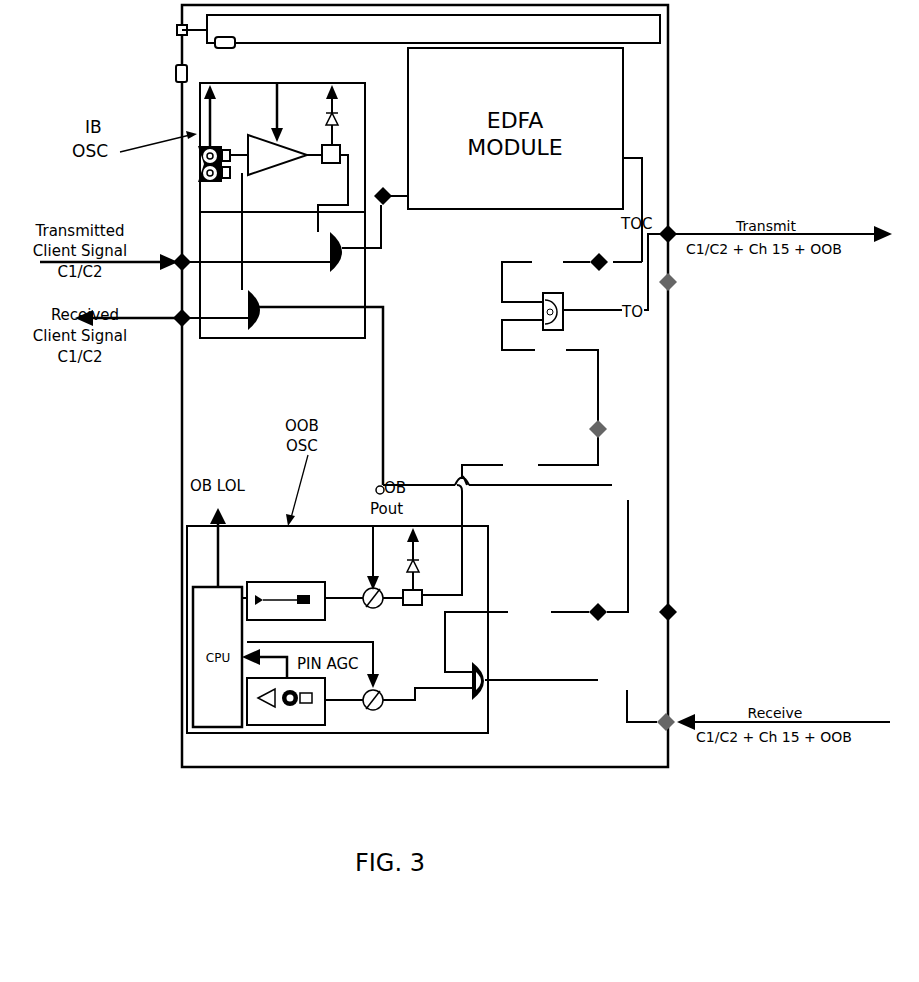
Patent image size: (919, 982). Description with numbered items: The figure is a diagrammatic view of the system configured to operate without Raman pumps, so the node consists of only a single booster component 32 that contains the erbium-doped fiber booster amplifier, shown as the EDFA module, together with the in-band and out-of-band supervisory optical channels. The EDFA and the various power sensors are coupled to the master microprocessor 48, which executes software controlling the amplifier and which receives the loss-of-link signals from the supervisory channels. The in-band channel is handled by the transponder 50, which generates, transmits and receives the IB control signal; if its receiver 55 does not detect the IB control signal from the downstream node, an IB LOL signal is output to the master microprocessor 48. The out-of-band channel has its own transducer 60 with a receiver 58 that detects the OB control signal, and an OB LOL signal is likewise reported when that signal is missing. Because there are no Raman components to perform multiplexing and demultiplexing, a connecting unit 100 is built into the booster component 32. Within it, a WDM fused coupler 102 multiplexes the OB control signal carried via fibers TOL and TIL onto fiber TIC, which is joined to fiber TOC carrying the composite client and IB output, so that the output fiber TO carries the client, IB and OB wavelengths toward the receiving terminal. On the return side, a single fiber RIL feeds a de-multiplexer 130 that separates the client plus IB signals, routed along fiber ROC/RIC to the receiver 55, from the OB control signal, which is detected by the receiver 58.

The booster component 32 is at (437, 318).
The master microprocessor 48 is at (332, 41).
The transponder 50 is at (293, 301).
The receiver 55 is at (208, 180).
The receiver 58 is at (247, 703).
The transducer 60 is at (257, 594).
The connecting unit 100 is at (488, 363).
The WDM fused coupler 102 is at (540, 288).
The de-multiplexer 130 is at (483, 686).